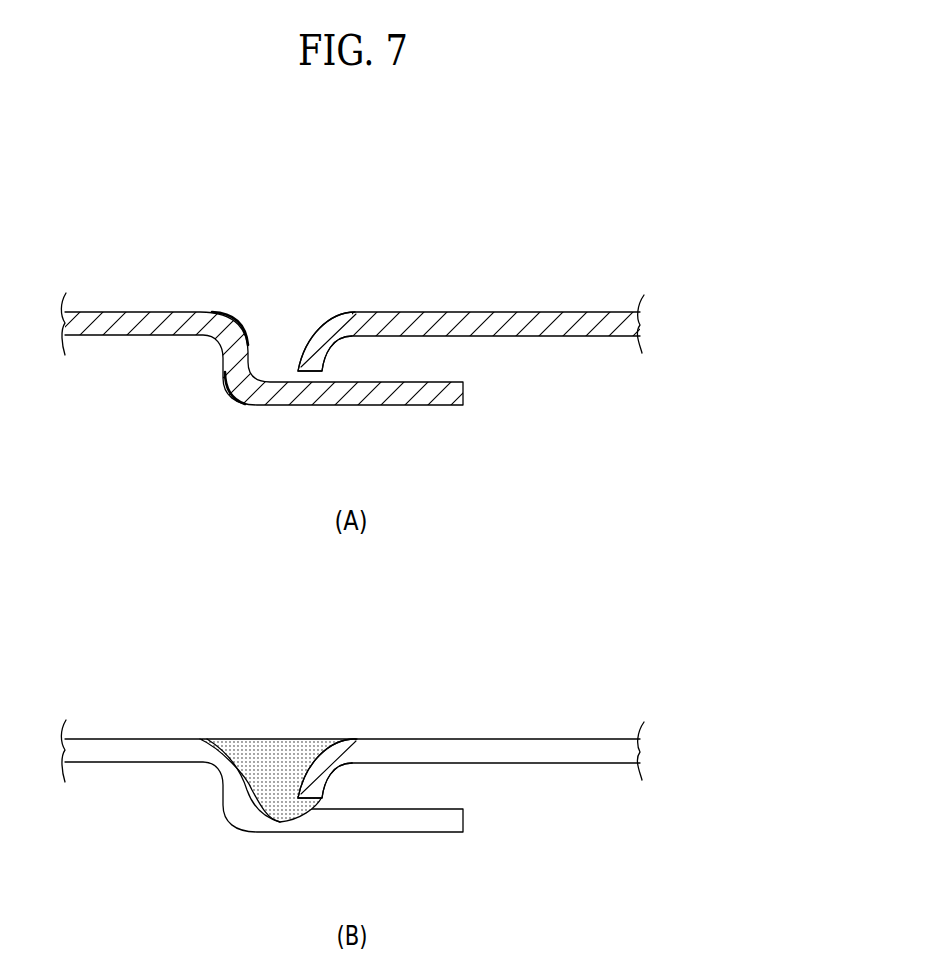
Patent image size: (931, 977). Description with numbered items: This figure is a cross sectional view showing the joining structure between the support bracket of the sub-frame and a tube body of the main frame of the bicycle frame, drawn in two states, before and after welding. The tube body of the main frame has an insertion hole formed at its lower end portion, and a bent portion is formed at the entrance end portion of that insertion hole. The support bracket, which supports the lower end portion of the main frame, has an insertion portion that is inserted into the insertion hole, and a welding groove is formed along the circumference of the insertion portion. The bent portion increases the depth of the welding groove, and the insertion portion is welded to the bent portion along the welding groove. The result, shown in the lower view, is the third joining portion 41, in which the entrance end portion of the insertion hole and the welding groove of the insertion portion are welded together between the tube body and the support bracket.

The third joining portion 41 is at (265, 742).